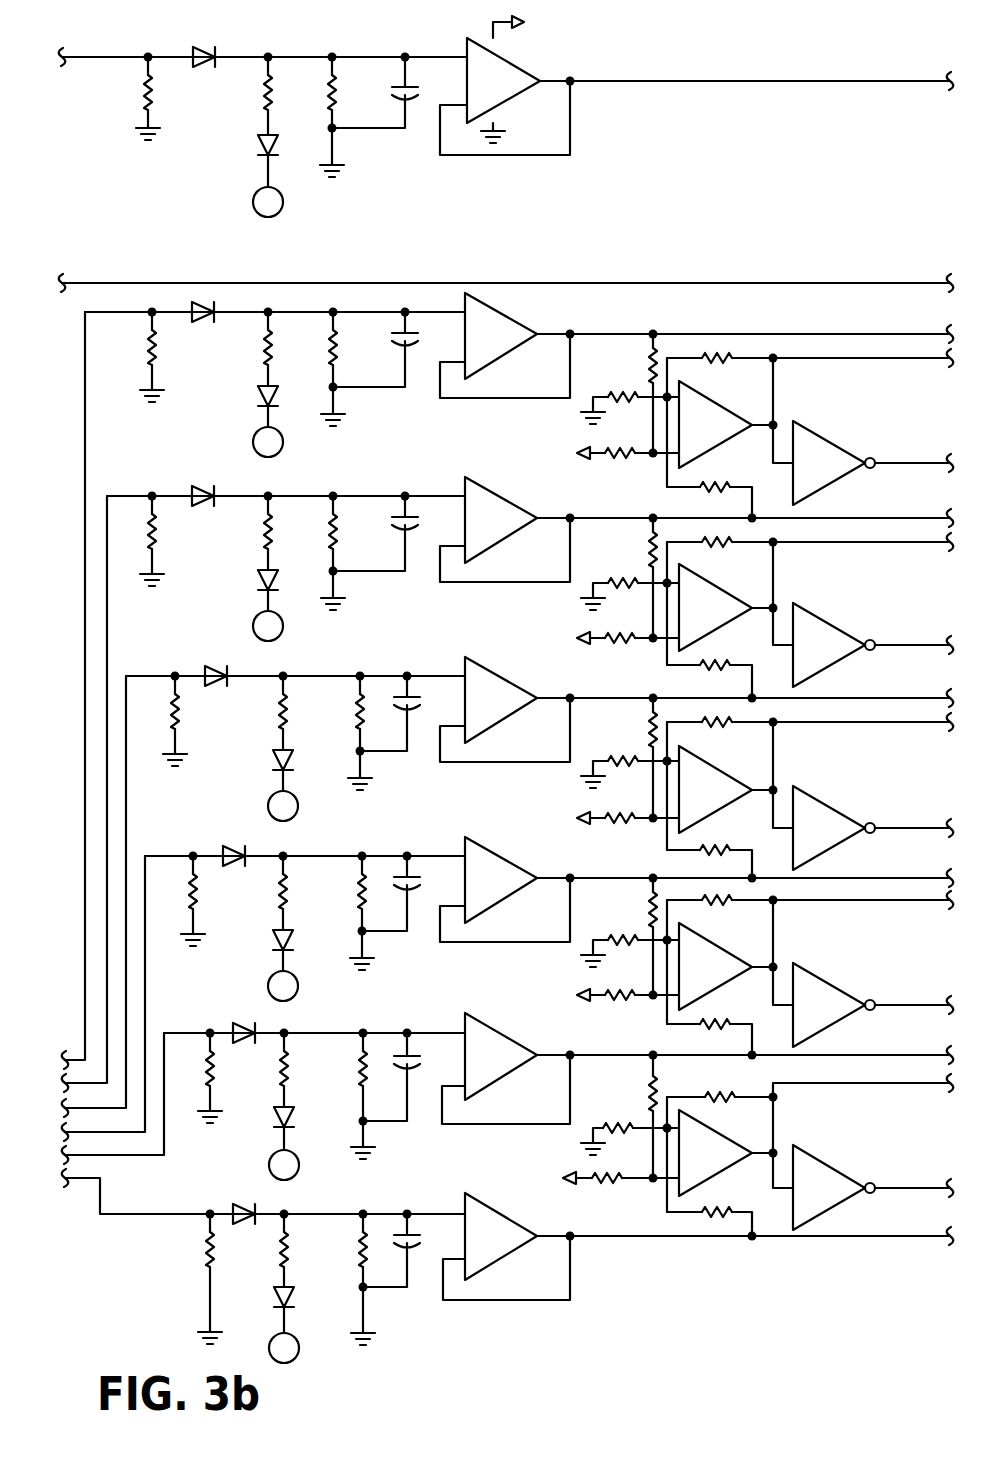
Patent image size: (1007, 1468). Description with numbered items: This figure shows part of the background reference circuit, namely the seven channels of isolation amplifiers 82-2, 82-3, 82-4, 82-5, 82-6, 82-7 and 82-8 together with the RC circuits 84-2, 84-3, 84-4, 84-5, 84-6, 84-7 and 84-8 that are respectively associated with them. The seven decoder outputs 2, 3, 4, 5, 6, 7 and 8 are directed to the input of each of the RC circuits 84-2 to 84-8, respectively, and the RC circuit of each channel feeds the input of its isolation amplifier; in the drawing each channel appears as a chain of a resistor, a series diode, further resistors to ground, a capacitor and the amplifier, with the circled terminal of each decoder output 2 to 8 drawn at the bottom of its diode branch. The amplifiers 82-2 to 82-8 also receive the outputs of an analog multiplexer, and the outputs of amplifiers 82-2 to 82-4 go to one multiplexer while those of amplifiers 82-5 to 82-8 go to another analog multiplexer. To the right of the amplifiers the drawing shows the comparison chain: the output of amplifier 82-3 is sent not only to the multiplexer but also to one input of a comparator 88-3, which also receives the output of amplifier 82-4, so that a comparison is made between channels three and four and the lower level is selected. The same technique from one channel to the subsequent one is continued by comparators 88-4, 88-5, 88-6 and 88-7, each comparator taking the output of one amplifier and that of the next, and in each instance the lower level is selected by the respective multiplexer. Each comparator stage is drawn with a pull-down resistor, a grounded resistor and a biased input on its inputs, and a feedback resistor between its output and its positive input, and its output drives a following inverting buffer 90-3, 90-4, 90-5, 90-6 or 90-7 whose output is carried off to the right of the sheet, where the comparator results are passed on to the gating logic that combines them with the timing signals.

The isolation amplifier 82-2 is at (530, 70).
The RC circuit 84-2 is at (362, 130).
The isolation amplifier 82-3 is at (523, 327).
The RC circuit 84-3 is at (367, 390).
The comparator 88-3 is at (726, 412).
The inverter 90-3 is at (833, 442).
The isolation amplifier 82-4 is at (501, 502).
The RC circuit 84-4 is at (367, 574).
The comparator 88-4 is at (726, 594).
The inverter 90-4 is at (845, 630).
The isolation amplifier 82-5 is at (494, 679).
The RC circuit 84-5 is at (377, 745).
The comparator 88-5 is at (728, 779).
The inverter 90-5 is at (845, 810).
The isolation amplifier 82-6 is at (496, 864).
The RC circuit 84-6 is at (382, 935).
The comparator 88-6 is at (731, 961).
The inverter 90-6 is at (830, 995).
The isolation amplifier 82-7 is at (533, 1030).
The RC circuit 84-7 is at (383, 1123).
The comparator 88-7 is at (731, 1149).
The inverter 90-7 is at (833, 1181).
The isolation amplifier 82-8 is at (520, 1196).
The RC circuit 84-8 is at (386, 1288).
The decoder output 2 is at (268, 137).
The decoder output 3 is at (268, 384).
The decoder output 4 is at (268, 568).
The decoder output 5 is at (283, 748).
The decoder output 6 is at (283, 928).
The decoder output 7 is at (284, 1106).
The decoder output 8 is at (284, 1288).